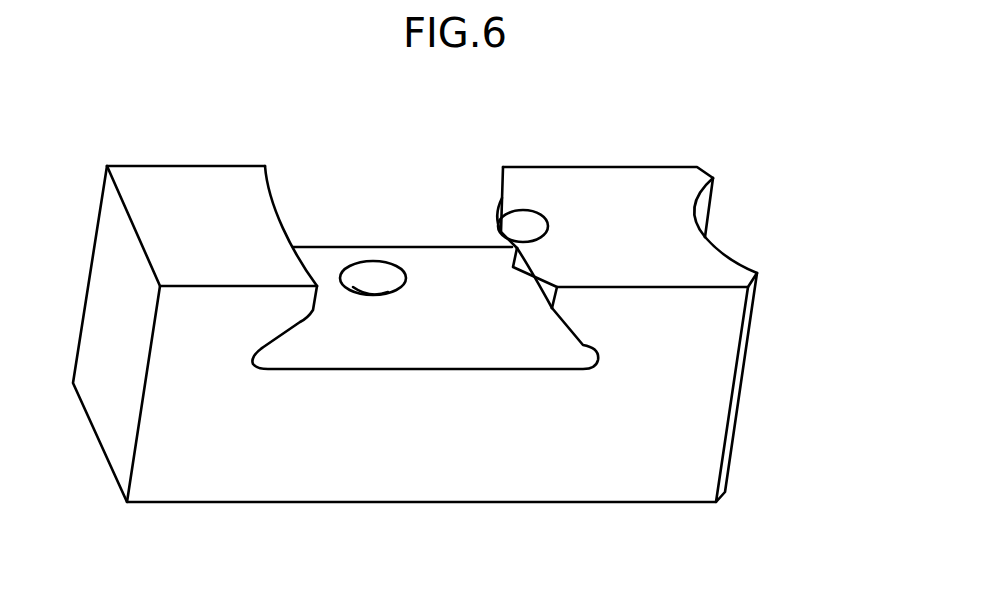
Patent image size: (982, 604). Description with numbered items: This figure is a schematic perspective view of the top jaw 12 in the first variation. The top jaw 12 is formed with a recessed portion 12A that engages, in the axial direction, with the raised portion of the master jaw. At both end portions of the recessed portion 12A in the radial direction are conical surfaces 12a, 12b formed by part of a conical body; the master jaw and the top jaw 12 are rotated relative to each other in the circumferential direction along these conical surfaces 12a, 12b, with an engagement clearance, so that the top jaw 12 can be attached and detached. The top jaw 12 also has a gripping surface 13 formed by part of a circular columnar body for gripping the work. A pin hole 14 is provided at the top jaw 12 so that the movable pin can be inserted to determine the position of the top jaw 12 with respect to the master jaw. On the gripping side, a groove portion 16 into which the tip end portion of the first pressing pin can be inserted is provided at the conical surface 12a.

The top jaw 12 is at (780, 160).
The recessed portion 12A is at (380, 327).
The conical surface 12a is at (500, 200).
The conical surface 12b is at (272, 203).
The gripping surface 13 is at (700, 202).
The pin hole 14 is at (370, 280).
The groove portion 16 is at (517, 232).